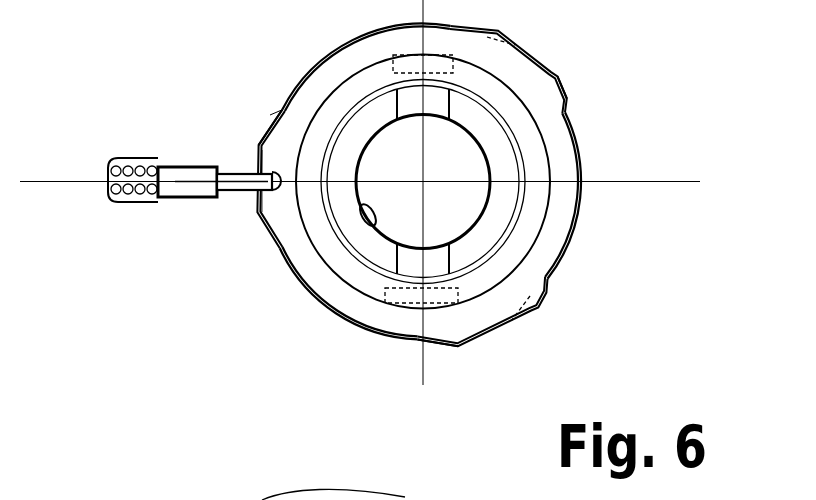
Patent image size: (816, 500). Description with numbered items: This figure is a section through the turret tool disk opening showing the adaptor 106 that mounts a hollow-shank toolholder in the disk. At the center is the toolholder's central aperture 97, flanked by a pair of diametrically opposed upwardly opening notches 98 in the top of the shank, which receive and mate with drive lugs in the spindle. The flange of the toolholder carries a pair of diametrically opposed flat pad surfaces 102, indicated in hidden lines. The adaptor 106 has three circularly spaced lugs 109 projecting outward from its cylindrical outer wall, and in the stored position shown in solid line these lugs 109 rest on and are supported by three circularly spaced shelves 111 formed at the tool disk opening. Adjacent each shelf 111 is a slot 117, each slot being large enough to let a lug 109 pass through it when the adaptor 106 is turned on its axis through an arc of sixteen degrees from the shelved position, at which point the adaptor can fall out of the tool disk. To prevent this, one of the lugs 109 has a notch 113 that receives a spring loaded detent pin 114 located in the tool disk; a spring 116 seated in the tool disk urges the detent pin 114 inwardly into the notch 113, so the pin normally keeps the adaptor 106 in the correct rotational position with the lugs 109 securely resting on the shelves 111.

The central aperture 97 is at (370, 218).
The notches 98 is at (407, 100).
The flat pad surfaces 102 is at (410, 300).
The adaptor 106 is at (562, 150).
The lugs 109 is at (528, 50).
The shelves 111 is at (513, 38).
The notch 113 is at (260, 147).
The detent pin 114 is at (170, 172).
The spring 116 is at (127, 190).
The slot 117 is at (553, 80).